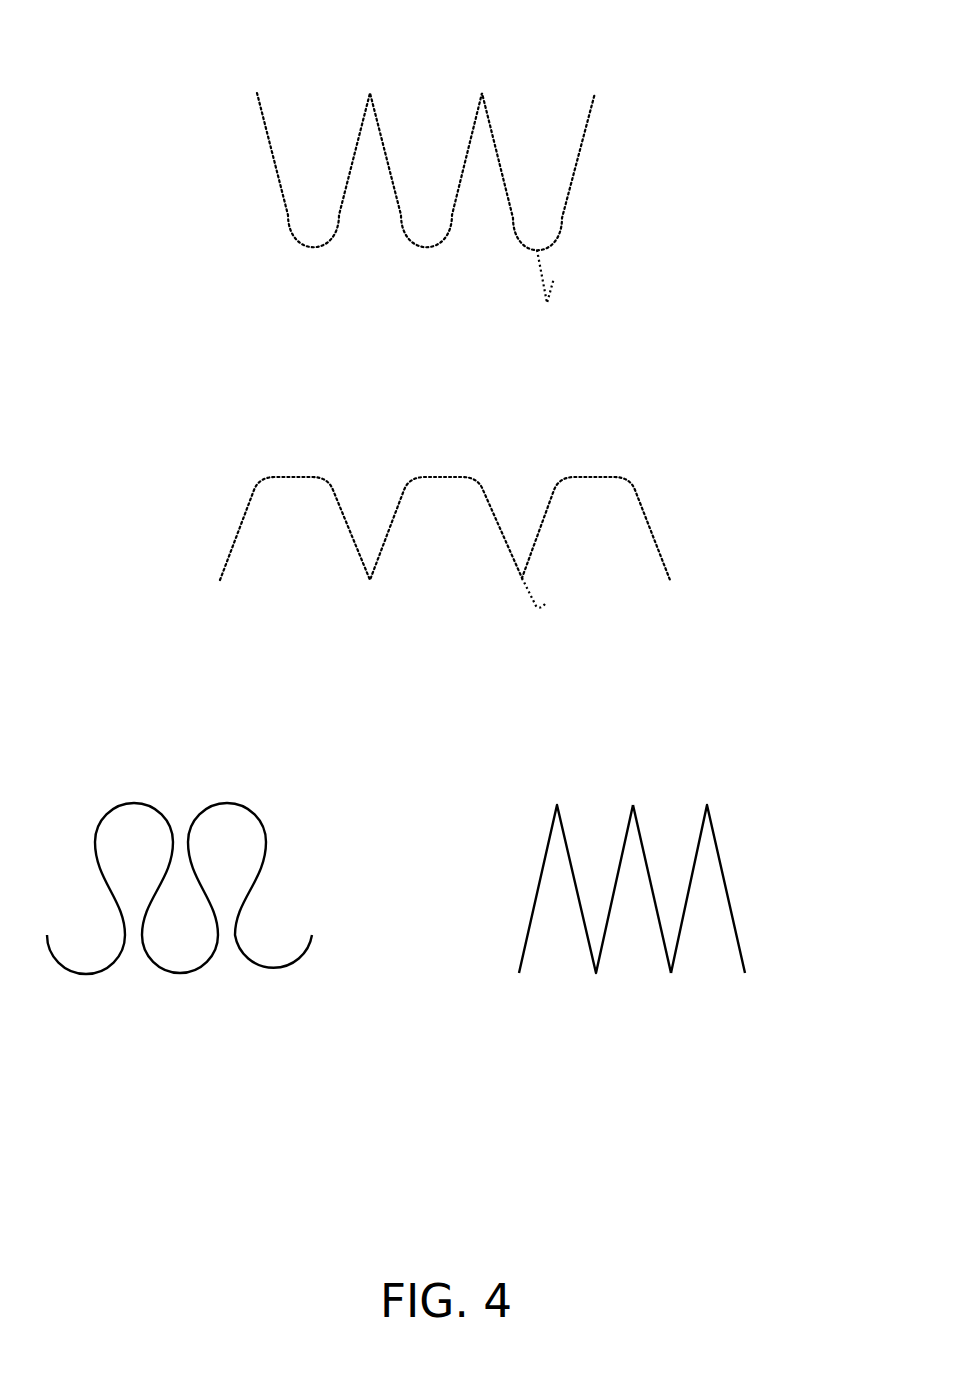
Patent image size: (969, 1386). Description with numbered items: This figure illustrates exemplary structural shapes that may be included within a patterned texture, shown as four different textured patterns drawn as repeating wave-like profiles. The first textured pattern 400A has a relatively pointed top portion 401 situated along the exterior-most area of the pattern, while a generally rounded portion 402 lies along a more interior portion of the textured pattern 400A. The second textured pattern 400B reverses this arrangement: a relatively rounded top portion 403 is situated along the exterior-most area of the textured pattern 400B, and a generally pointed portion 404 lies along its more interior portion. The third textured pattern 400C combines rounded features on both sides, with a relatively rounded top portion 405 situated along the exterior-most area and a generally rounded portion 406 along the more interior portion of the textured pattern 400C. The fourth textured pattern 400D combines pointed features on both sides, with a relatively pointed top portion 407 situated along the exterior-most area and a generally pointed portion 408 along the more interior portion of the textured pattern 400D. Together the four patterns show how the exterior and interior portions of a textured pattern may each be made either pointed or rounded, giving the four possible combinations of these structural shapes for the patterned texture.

The textured pattern 400A is at (460, 161).
The pointed top portion 401 is at (482, 93).
The rounded portion 402 is at (554, 278).
The textured pattern 400B is at (473, 574).
The rounded top portion 403 is at (448, 477).
The pointed portion 404 is at (545, 604).
The textured pattern 400C is at (316, 911).
The rounded top portion 405 is at (258, 812).
The rounded portion 406 is at (178, 975).
The textured pattern 400D is at (797, 901).
The pointed top portion 407 is at (707, 805).
The pointed portion 408 is at (671, 973).